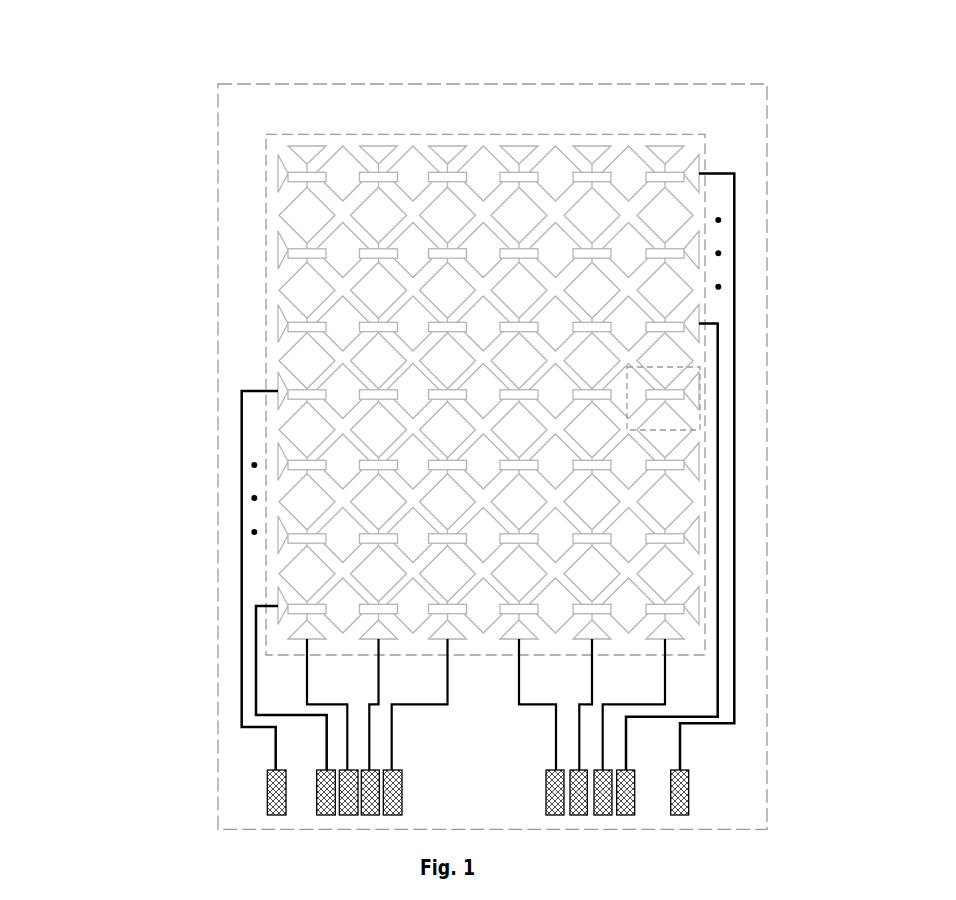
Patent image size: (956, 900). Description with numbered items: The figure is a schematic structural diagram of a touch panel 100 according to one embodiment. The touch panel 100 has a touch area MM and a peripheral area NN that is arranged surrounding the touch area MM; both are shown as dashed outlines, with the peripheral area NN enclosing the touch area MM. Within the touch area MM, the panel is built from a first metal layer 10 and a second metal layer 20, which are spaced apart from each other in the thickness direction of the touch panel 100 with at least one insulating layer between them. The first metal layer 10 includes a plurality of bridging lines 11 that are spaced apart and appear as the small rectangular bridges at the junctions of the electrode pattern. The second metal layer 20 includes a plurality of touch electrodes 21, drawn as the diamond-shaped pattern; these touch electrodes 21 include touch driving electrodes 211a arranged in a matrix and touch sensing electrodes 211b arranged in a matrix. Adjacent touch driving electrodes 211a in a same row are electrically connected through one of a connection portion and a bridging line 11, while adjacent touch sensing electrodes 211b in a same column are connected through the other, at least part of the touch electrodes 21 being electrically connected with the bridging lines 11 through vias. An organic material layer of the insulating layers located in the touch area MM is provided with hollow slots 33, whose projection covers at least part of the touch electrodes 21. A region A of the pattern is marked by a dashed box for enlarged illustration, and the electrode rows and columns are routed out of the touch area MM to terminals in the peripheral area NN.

The touch panel 100 is at (250, 51).
The first metal layer 10 is at (437, 43).
The bridging line 11 is at (382, 175).
The second metal layer 20 is at (77, 317).
The touch electrode 21 is at (389, 392).
The touch driving electrode 211a is at (342, 382).
The touch sensing electrode 211b is at (302, 289).
The hollow slot 33 is at (685, 520).
The enlarged region A is at (673, 363).
The touch area MM is at (643, 138).
The peripheral area NN is at (735, 123).